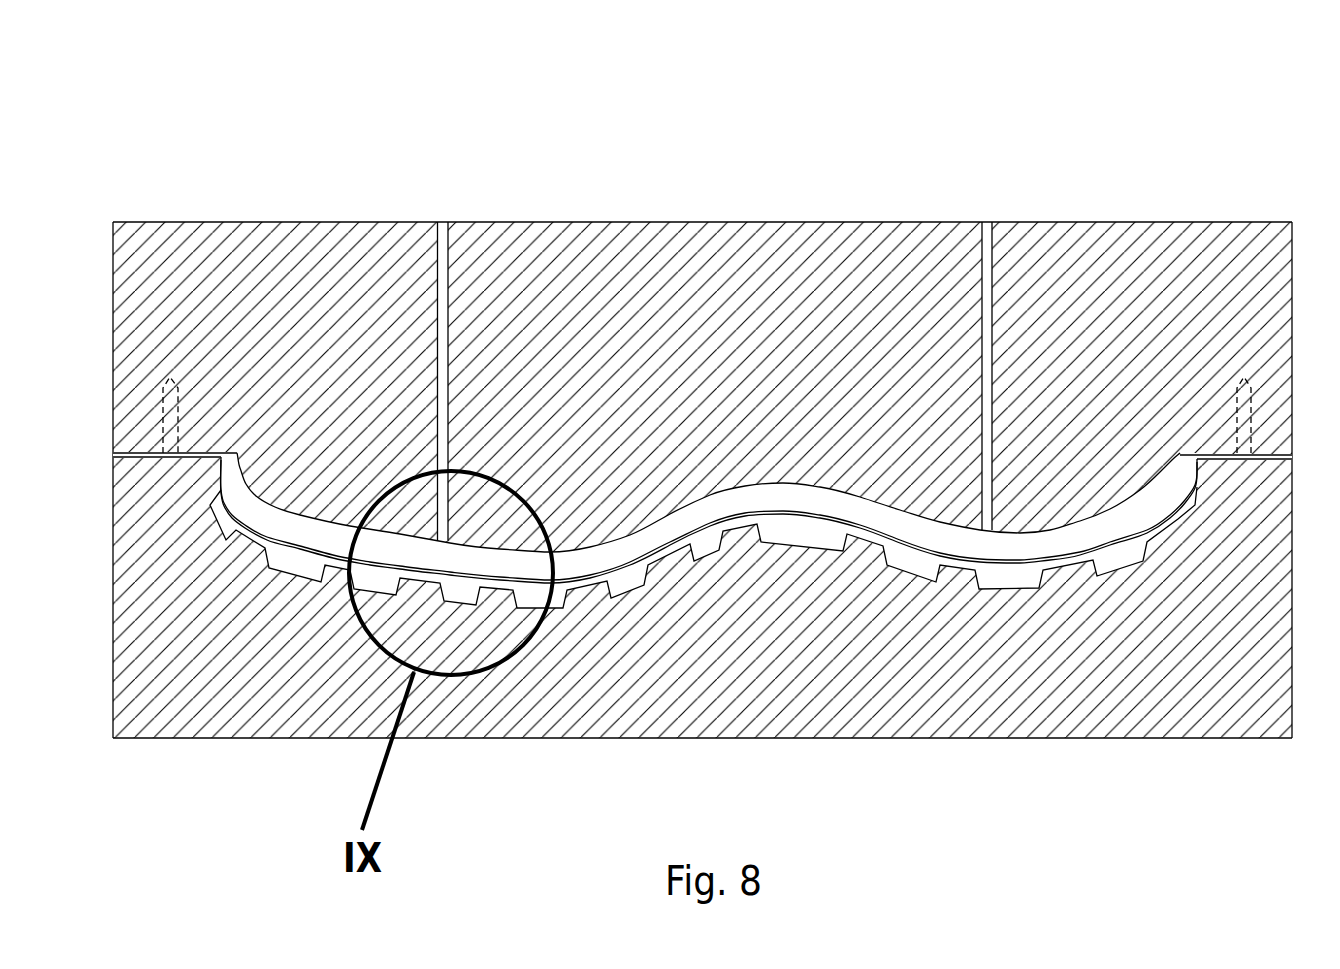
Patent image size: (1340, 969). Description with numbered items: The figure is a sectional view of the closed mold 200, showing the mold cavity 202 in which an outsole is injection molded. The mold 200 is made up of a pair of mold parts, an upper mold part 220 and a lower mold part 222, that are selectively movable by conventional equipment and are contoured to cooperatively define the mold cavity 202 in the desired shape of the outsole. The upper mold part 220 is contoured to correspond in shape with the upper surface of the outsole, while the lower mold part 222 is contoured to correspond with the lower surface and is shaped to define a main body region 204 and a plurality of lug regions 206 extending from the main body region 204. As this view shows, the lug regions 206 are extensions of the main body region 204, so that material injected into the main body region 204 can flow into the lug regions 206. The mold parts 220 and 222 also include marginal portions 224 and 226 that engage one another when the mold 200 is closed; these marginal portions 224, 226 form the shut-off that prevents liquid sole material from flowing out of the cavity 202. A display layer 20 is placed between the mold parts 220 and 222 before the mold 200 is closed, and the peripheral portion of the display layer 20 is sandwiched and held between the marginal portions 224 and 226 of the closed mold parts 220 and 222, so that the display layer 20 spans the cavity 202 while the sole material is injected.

The mold 200 is at (1104, 160).
The mold cavity 202 is at (1040, 562).
The main body region 204 is at (760, 497).
The lug regions 206 is at (453, 593).
The upper mold part 220 is at (1168, 222).
The lower mold part 222 is at (1100, 738).
The marginal portion 224 is at (137, 452).
The marginal portion 226 is at (115, 455).
The display layer 20 is at (1182, 517).